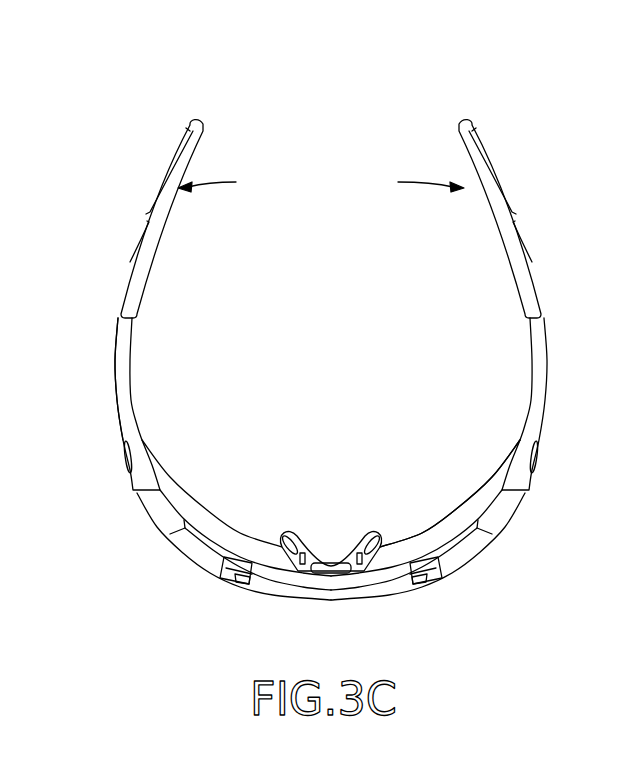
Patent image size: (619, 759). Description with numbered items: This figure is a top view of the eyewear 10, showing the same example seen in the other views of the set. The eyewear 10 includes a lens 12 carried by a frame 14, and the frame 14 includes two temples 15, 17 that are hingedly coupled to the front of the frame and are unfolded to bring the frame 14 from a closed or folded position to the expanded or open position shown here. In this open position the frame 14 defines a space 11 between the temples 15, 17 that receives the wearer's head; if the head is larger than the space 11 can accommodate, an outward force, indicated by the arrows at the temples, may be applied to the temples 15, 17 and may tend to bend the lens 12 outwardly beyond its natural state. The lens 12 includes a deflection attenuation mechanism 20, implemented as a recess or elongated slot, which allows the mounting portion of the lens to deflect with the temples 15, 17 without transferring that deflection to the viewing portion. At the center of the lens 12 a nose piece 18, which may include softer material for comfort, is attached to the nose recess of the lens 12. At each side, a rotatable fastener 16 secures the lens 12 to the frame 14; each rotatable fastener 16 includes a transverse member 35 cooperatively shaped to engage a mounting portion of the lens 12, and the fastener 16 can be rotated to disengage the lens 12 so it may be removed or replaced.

The eyewear 10 is at (118, 160).
The space 11 is at (347, 341).
The lens 12 is at (448, 513).
The frame 14 is at (133, 333).
The temple 15 is at (546, 365).
The rotatable fastener 16 is at (219, 578).
The temple 17 is at (117, 368).
The nose piece 18 is at (303, 532).
The deflection attenuation mechanism 20 is at (203, 572).
The transverse member 35 is at (245, 585).